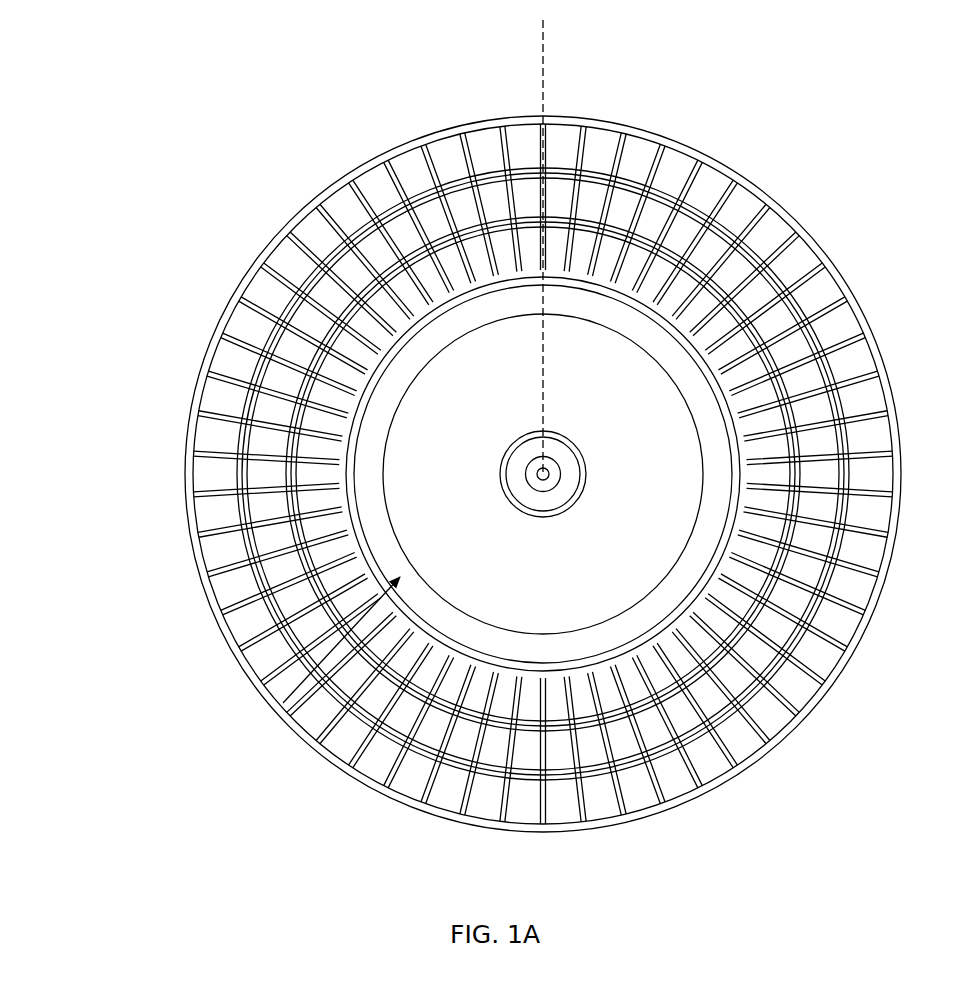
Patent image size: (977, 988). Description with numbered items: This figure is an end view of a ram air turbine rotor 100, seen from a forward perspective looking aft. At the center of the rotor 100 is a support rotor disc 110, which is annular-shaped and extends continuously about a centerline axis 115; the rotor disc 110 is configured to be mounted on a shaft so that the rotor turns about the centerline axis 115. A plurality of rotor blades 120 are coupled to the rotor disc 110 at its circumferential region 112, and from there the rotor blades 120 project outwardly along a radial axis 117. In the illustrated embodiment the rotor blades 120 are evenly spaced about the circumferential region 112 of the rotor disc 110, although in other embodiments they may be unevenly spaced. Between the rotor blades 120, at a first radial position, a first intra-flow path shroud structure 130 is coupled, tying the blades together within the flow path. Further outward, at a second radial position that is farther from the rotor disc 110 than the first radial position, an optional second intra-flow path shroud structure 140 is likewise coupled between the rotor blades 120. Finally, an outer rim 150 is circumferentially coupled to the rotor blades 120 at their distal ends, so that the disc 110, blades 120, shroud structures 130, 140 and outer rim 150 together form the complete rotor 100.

The ram air turbine rotor 100 is at (212, 170).
The support rotor disc 110 is at (278, 698).
The circumferential region 112 is at (353, 425).
The centerline axis 115 is at (549, 474).
The radial axis 117 is at (546, 72).
The rotor blades 120 is at (403, 183).
The first intra-flow path shroud structure 130 is at (300, 562).
The second intra-flow path shroud structure 140 is at (234, 437).
The outer rim 150 is at (190, 520).